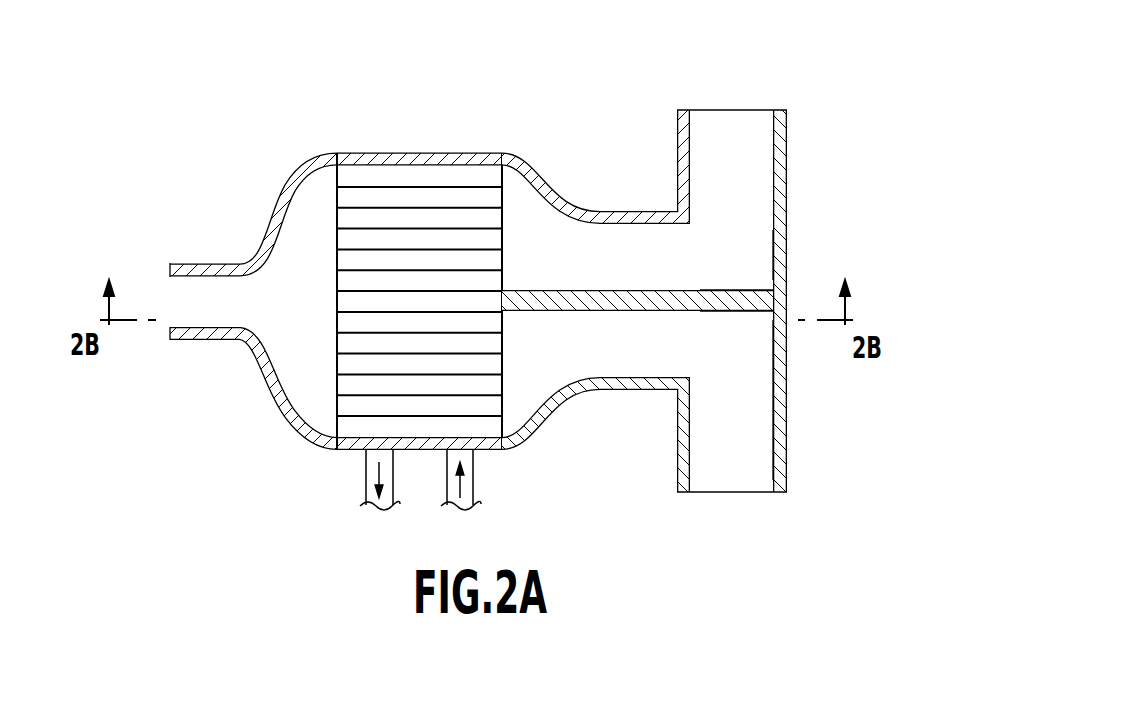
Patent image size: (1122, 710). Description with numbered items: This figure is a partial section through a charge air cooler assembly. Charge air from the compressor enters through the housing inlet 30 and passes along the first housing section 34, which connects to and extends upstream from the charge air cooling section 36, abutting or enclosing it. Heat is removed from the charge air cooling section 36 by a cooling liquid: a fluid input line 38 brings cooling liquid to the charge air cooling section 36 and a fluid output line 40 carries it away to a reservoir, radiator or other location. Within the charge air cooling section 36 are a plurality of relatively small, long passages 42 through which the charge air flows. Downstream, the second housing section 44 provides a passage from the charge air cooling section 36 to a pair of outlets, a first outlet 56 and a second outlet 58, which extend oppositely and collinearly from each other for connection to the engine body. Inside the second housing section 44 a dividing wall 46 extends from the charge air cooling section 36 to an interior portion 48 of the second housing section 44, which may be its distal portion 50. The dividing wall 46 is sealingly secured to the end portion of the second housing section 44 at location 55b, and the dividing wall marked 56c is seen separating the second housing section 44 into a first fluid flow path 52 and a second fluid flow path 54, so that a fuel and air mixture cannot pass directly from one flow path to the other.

The housing inlet 30 is at (170, 292).
The first housing section 34 is at (257, 356).
The charge air cooling section 36 is at (337, 218).
The fluid input line 38 is at (475, 480).
The fluid output line 40 is at (366, 480).
The passages 42 is at (500, 342).
The second housing section 44 is at (603, 390).
The dividing wall 46 is at (712, 312).
The interior portion 48 is at (773, 276).
The distal portion 50 is at (788, 258).
The first fluid flow path 52 is at (620, 247).
The second fluid flow path 54 is at (677, 353).
The location 55b is at (773, 283).
The first outlet 56 is at (732, 110).
The partition wall 56c is at (502, 290).
The second outlet 58 is at (732, 492).